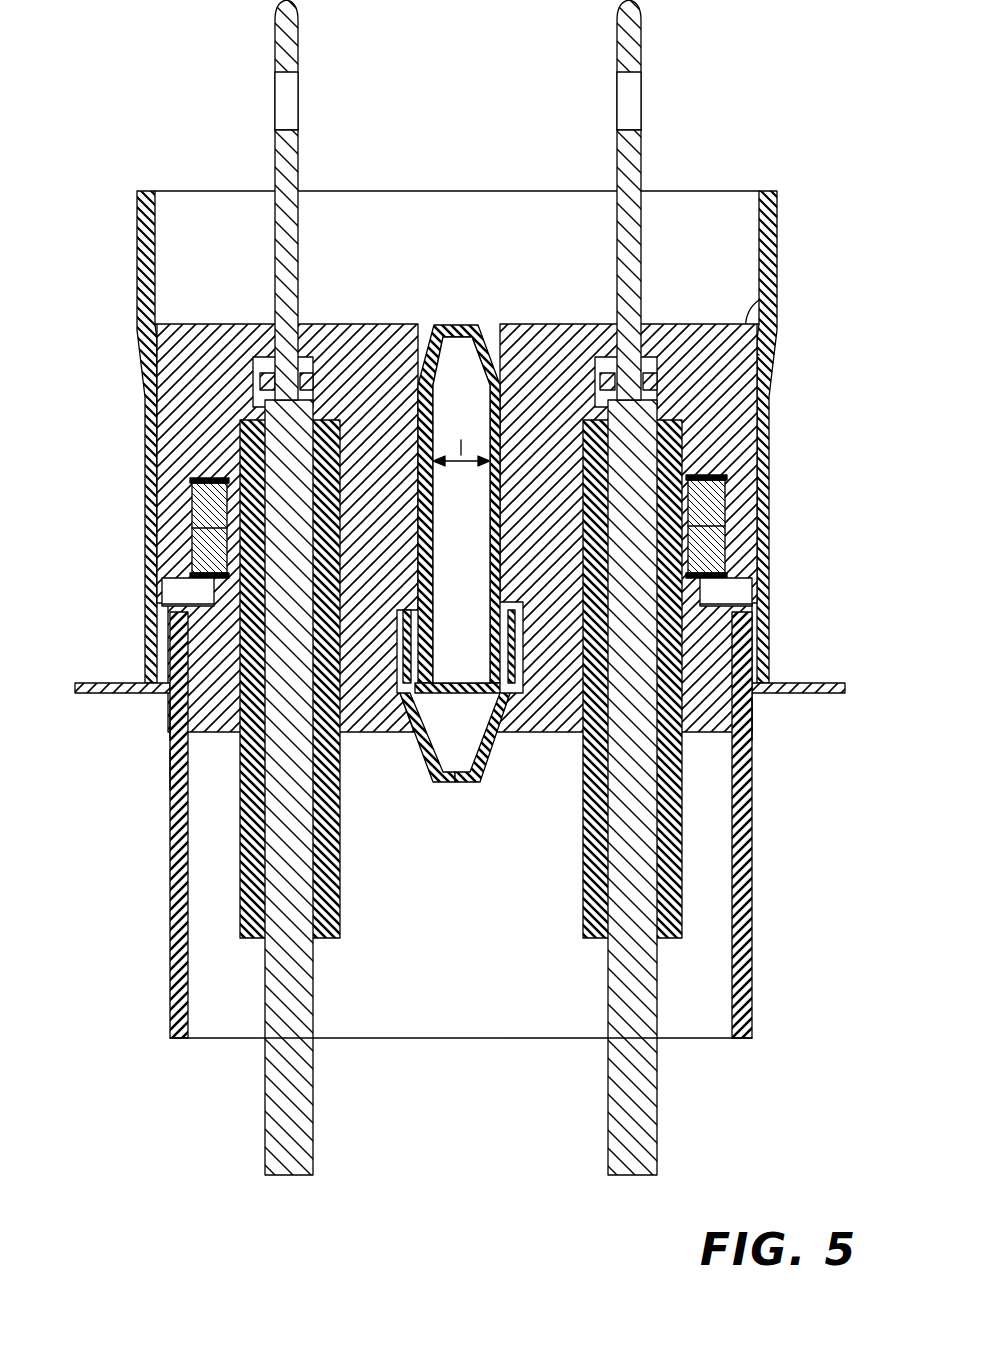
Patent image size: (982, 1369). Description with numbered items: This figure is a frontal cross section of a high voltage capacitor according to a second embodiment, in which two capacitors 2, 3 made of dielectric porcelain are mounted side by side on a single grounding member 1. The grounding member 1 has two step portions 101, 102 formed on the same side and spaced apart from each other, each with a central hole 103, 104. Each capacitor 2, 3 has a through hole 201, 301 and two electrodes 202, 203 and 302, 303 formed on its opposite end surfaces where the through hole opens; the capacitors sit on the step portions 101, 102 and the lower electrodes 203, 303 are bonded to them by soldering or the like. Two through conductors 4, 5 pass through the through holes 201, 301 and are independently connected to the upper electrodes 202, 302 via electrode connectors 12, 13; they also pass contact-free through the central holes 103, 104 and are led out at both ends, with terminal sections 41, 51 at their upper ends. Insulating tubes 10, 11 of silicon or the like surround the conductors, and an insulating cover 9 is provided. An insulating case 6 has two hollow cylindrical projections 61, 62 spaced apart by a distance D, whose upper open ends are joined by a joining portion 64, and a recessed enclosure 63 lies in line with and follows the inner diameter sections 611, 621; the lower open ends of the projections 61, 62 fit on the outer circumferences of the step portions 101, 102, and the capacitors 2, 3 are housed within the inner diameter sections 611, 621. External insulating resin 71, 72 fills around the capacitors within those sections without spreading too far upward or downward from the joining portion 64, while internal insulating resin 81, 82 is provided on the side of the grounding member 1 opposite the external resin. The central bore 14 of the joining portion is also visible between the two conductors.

The grounding member 1 is at (88, 682).
The capacitor 2 is at (143, 539).
The capacitor 3 is at (765, 538).
The through conductor 4 is at (269, 587).
The through conductor 5 is at (665, 587).
The insulating case 6 is at (454, 400).
The insulating cover 9 is at (139, 825).
The insulating tube 10 is at (345, 848).
The insulating tube 11 is at (588, 848).
The electrode connector 12 is at (238, 418).
The electrode connector 13 is at (560, 330).
The central bore 14 is at (460, 657).
The terminal section 41 is at (280, 57).
The terminal section 51 is at (635, 57).
The hollow cylindrical projection 61 is at (145, 362).
The hollow cylindrical projection 62 is at (774, 398).
The recessed enclosure 63 is at (706, 283).
The joining portion 64 is at (457, 558).
The external insulating resin 71 is at (336, 328).
The external insulating resin 72 is at (678, 328).
The internal insulating resin 81 is at (380, 700).
The internal insulating resin 82 is at (548, 712).
The step portion 101 is at (180, 715).
The step portion 102 is at (742, 712).
The central hole 103 is at (180, 765).
The central hole 104 is at (776, 825).
The through hole 201 is at (200, 548).
The electrode 202 is at (200, 480).
The electrode 203 is at (145, 575).
The through hole 301 is at (712, 556).
The electrode 302 is at (730, 466).
The electrode 303 is at (715, 585).
The inner diameter section 611 is at (157, 412).
The inner diameter section 621 is at (768, 300).